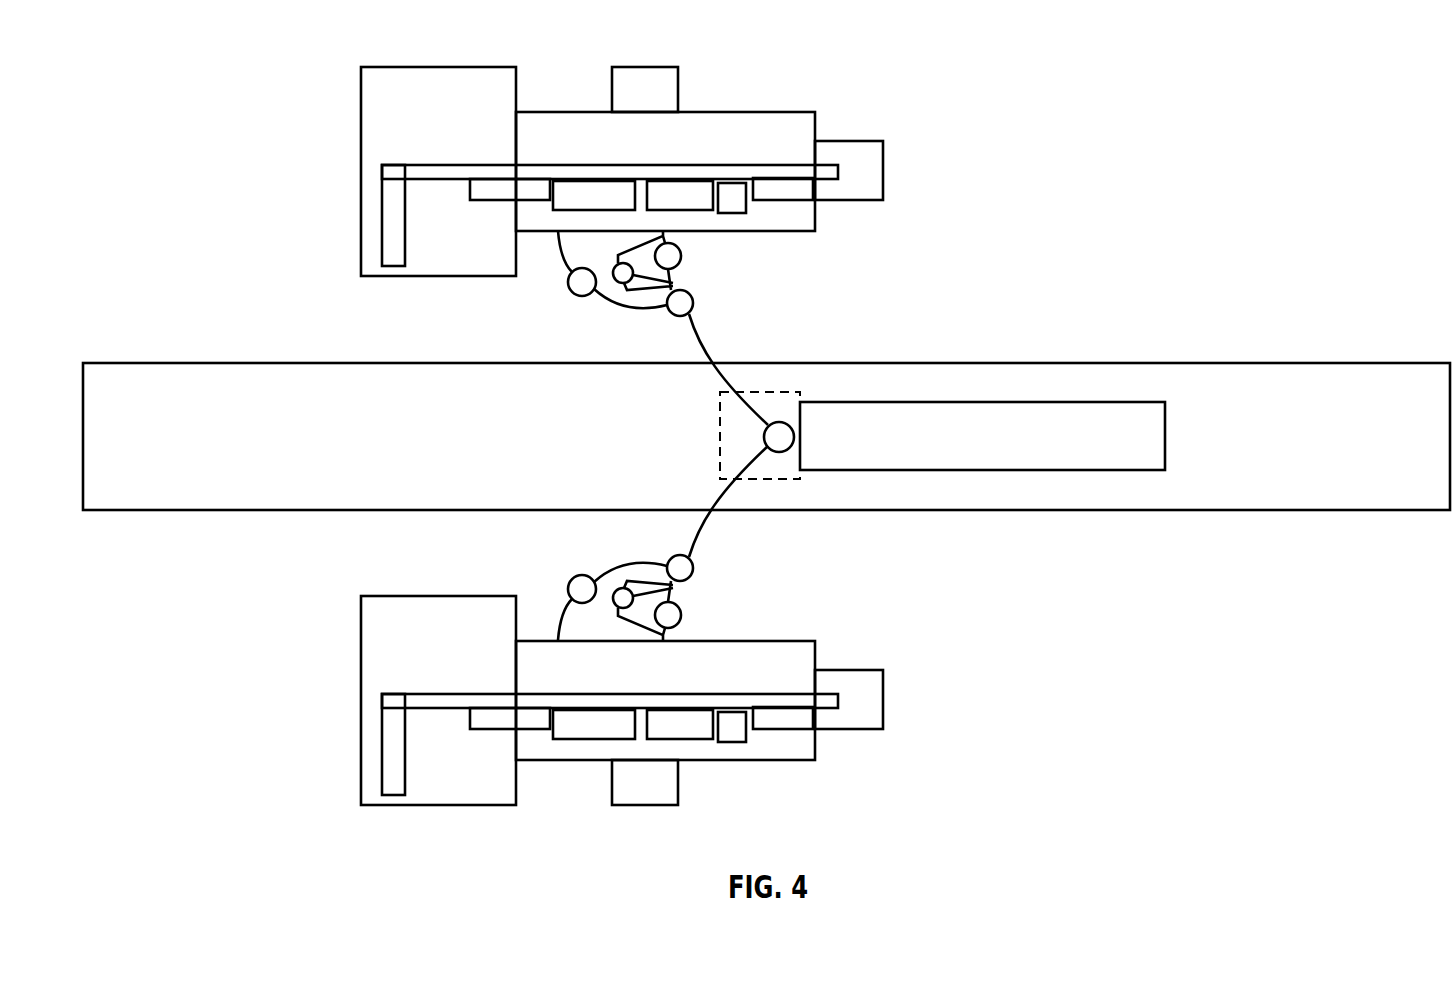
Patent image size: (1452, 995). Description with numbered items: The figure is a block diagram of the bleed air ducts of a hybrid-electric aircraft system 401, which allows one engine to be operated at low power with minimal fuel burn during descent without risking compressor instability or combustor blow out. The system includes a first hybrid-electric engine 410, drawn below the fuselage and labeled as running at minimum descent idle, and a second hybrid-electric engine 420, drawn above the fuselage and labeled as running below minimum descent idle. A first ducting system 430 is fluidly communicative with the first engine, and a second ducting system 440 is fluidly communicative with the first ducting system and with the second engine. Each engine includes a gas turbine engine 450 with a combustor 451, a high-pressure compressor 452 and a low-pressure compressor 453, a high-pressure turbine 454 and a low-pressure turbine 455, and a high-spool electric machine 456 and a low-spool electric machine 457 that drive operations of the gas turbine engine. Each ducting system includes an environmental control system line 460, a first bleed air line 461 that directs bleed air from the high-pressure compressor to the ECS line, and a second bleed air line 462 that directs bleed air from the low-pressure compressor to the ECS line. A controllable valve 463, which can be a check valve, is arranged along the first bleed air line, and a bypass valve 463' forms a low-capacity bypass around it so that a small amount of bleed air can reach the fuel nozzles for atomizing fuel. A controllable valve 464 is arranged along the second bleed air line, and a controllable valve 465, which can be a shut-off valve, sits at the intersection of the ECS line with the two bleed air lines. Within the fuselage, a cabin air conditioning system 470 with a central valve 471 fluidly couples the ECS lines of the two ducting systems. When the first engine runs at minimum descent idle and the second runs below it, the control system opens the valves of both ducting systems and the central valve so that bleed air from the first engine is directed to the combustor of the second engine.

The hybrid-electric aircraft system 401 is at (1245, 349).
The first hybrid-electric engine 410 is at (352, 818).
The second hybrid-electric engine 420 is at (354, 56).
The first ducting system 430 is at (681, 521).
The second ducting system 440 is at (684, 350).
The gas turbine engine 450 is at (517, 111).
The combustor 451 is at (672, 180).
The high-pressure compressor 452 is at (482, 202).
The low-pressure compressor 453 is at (570, 180).
The high-pressure turbine 454 is at (803, 200).
The low-pressure turbine 455 is at (733, 182).
The high-spool electric machine 456 is at (647, 67).
The low-spool electric machine 457 is at (883, 170).
The environmental control system line 460 is at (715, 372).
The first bleed air line 461 is at (665, 236).
The second bleed air line 462 is at (555, 248).
The controllable valve 463 is at (710, 435).
The bypass valve 463' is at (706, 435).
The controllable valve 464 is at (574, 296).
The controllable valve 465 is at (693, 304).
The cabin air conditioning system 470 is at (1165, 437).
The central valve 471 is at (711, 434).